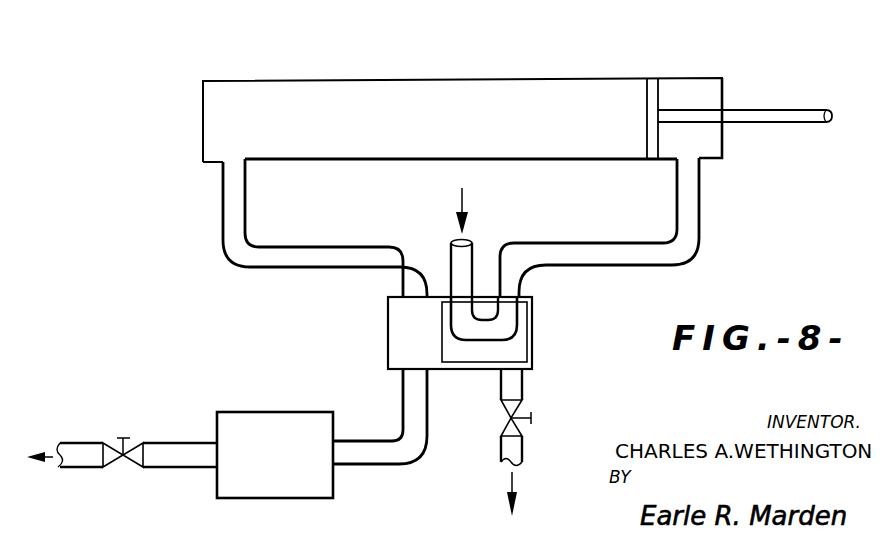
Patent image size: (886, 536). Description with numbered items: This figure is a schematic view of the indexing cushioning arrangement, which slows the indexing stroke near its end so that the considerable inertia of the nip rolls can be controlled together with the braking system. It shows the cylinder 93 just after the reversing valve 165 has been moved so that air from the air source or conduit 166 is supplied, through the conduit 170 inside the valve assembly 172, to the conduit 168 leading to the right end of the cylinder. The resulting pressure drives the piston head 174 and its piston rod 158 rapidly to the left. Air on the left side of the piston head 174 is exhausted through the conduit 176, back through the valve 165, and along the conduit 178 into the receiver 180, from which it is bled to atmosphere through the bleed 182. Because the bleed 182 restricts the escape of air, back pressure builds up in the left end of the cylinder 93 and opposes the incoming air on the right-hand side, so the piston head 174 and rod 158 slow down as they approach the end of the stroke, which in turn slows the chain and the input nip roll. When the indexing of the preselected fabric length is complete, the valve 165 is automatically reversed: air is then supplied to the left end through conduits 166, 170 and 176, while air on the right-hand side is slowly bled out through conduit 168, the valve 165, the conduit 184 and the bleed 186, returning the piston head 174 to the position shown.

The cylinder 93 is at (346, 81).
The piston head 174 is at (652, 90).
The piston rod 158 is at (782, 116).
The conduit 176 is at (242, 210).
The conduit 168 is at (694, 200).
The air source or conduit 166 is at (470, 251).
The conduit 170 is at (512, 318).
The valve assembly 172 is at (370, 338).
The reversing valve 165 is at (468, 357).
The conduit 178 is at (408, 430).
The receiver 180 is at (286, 417).
The bleed 182 is at (110, 468).
The conduit 184 is at (518, 384).
The bleed 186 is at (522, 432).